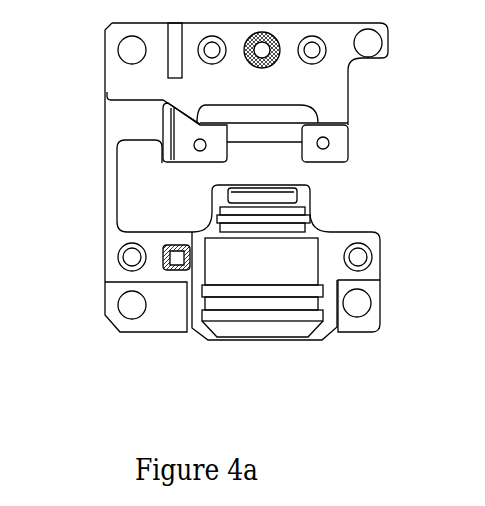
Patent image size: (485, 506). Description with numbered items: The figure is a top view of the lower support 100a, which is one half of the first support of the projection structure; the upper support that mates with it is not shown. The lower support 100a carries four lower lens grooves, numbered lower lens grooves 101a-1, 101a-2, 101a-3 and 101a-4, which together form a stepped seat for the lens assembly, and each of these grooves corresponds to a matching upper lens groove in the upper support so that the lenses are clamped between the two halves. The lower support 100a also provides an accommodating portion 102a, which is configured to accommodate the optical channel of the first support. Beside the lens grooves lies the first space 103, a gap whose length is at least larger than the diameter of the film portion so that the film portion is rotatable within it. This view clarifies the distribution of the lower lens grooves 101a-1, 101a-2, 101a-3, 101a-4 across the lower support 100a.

The lower support 100a is at (143, 85).
The accommodating portion 102a is at (282, 133).
The first space 103 is at (143, 195).
The lower lens groove 101a-1 is at (318, 322).
The lower lens groove 101a-2 is at (310, 293).
The lower lens groove 101a-3 is at (305, 215).
The lower lens groove 101a-4 is at (285, 195).